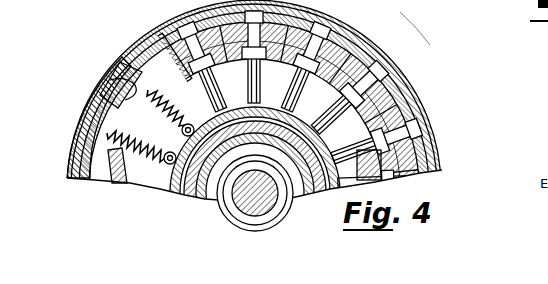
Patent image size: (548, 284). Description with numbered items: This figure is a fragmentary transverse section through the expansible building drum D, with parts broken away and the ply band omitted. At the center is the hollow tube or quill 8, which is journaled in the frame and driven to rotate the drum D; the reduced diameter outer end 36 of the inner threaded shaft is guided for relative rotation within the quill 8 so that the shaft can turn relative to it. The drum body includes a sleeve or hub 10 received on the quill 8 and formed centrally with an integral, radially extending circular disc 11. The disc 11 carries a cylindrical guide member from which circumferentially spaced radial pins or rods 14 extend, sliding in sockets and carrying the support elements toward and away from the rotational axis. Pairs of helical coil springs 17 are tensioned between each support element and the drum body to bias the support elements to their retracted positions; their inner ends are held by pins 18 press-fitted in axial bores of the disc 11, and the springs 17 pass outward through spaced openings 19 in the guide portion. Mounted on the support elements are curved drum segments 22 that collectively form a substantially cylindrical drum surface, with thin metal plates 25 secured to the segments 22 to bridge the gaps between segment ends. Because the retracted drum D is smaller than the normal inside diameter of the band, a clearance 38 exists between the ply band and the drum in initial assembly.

The tube or quill 8 is at (193, 200).
The sleeve or hub 10 is at (188, 137).
The circular disc 11 is at (384, 172).
The radial pins or rods 14 is at (306, 7).
The helical coil springs 17 is at (122, 90).
The pins 18 is at (166, 166).
The openings 19 is at (98, 181).
The drum segments 22 is at (162, 32).
The thin metal plates 25 is at (367, 42).
The reduced diameter outer end 36 is at (272, 205).
The clearance 38 is at (438, 22).
The expansible drum D is at (441, 122).